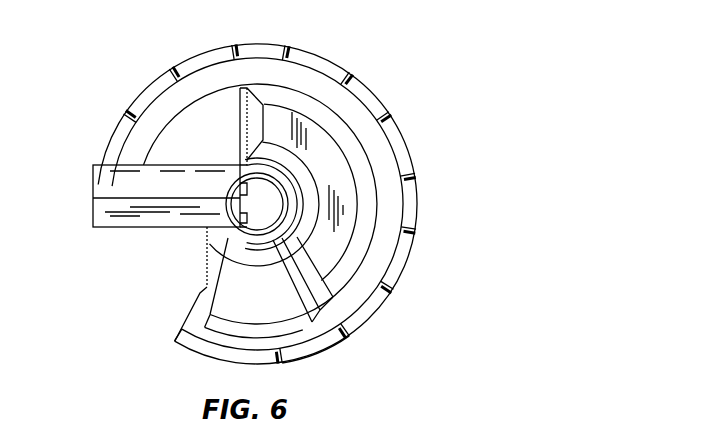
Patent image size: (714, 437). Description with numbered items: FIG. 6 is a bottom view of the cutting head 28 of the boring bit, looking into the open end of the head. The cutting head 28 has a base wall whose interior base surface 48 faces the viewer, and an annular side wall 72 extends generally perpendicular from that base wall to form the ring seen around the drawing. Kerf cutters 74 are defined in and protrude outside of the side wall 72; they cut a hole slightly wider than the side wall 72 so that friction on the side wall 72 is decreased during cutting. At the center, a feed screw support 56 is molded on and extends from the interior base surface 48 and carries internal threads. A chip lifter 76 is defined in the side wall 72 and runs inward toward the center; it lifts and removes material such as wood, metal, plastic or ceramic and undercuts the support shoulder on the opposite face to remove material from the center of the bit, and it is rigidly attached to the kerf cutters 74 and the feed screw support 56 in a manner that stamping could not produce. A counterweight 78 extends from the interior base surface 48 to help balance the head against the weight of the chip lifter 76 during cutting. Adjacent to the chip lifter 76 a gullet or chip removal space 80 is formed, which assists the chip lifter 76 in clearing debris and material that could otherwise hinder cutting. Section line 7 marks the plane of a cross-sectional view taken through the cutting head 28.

The cutting head 28 is at (265, 186).
The interior base surface 48 is at (277, 118).
The feed screw support 56 is at (302, 185).
The annular side wall 72 is at (403, 272).
The kerf cutters 74 is at (367, 315).
The chip lifter 76 is at (167, 226).
The counterweight 78 is at (265, 303).
The gullet or chip removal space 80 is at (149, 295).
The section line 7- 7 is at (60, 213).